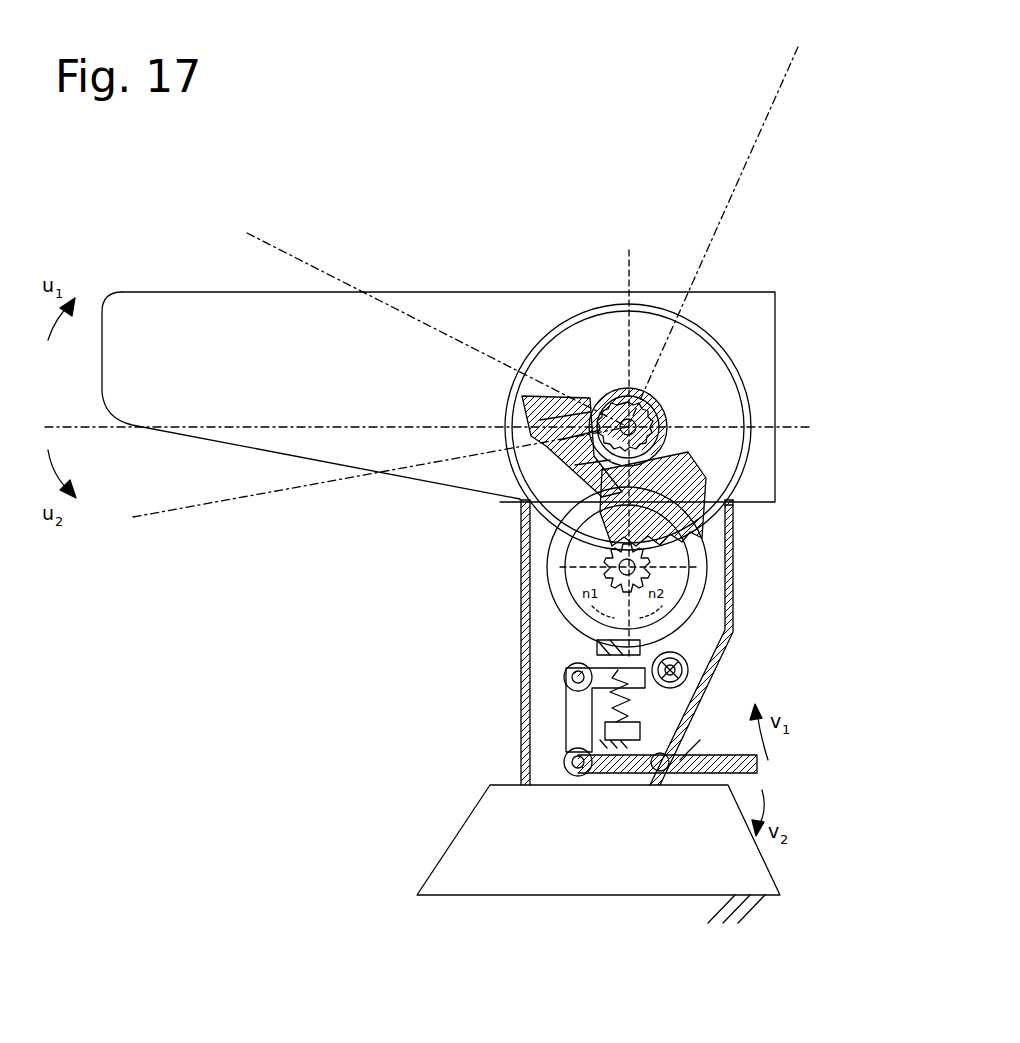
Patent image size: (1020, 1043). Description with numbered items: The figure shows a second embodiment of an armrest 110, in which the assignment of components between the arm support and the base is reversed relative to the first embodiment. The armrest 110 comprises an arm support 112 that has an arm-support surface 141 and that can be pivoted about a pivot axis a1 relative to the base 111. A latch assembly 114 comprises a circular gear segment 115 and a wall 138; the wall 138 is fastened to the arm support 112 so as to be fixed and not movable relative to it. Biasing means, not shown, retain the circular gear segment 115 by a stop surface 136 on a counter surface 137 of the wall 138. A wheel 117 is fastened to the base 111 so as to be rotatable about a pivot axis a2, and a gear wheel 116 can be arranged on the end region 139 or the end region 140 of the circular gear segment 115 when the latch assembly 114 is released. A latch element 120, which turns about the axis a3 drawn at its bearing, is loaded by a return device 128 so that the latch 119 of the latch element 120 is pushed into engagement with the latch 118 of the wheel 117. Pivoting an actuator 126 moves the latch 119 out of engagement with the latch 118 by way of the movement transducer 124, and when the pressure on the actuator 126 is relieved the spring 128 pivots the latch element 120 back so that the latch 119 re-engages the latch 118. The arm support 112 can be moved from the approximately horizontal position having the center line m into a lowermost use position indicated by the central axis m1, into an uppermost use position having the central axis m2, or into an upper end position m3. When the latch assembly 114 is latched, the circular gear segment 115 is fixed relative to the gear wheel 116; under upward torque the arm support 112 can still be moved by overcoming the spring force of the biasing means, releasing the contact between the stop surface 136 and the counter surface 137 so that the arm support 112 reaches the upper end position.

The armrest 110 is at (595, 193).
The base 111 is at (525, 680).
The arm support 112 is at (462, 308).
The latch assembly 114 is at (690, 432).
The circular gear segment 115 is at (692, 476).
The gear wheel 116 is at (700, 595).
The wheel 117 is at (560, 588).
The latch 118 is at (705, 543).
The latch 119 is at (580, 642).
The latch element 120 is at (700, 650).
The movement transducer 124 is at (575, 710).
The actuator 126 is at (760, 765).
The return device 128 is at (600, 718).
The stop surface 136 is at (565, 520).
The counter surface 137 is at (532, 505).
The wall 138 is at (525, 498).
The end region 139 is at (560, 545).
The end region 140 is at (738, 514).
The arm-support surface 141 is at (203, 290).
The center line m is at (64, 425).
The central axis m' m1 is at (153, 520).
The central axis m" m2 is at (267, 236).
The upper end position m''' m3 is at (785, 78).
The pivot axis a1 is at (624, 442).
The pivot axis a2 is at (700, 567).
The axis a3 is at (700, 688).